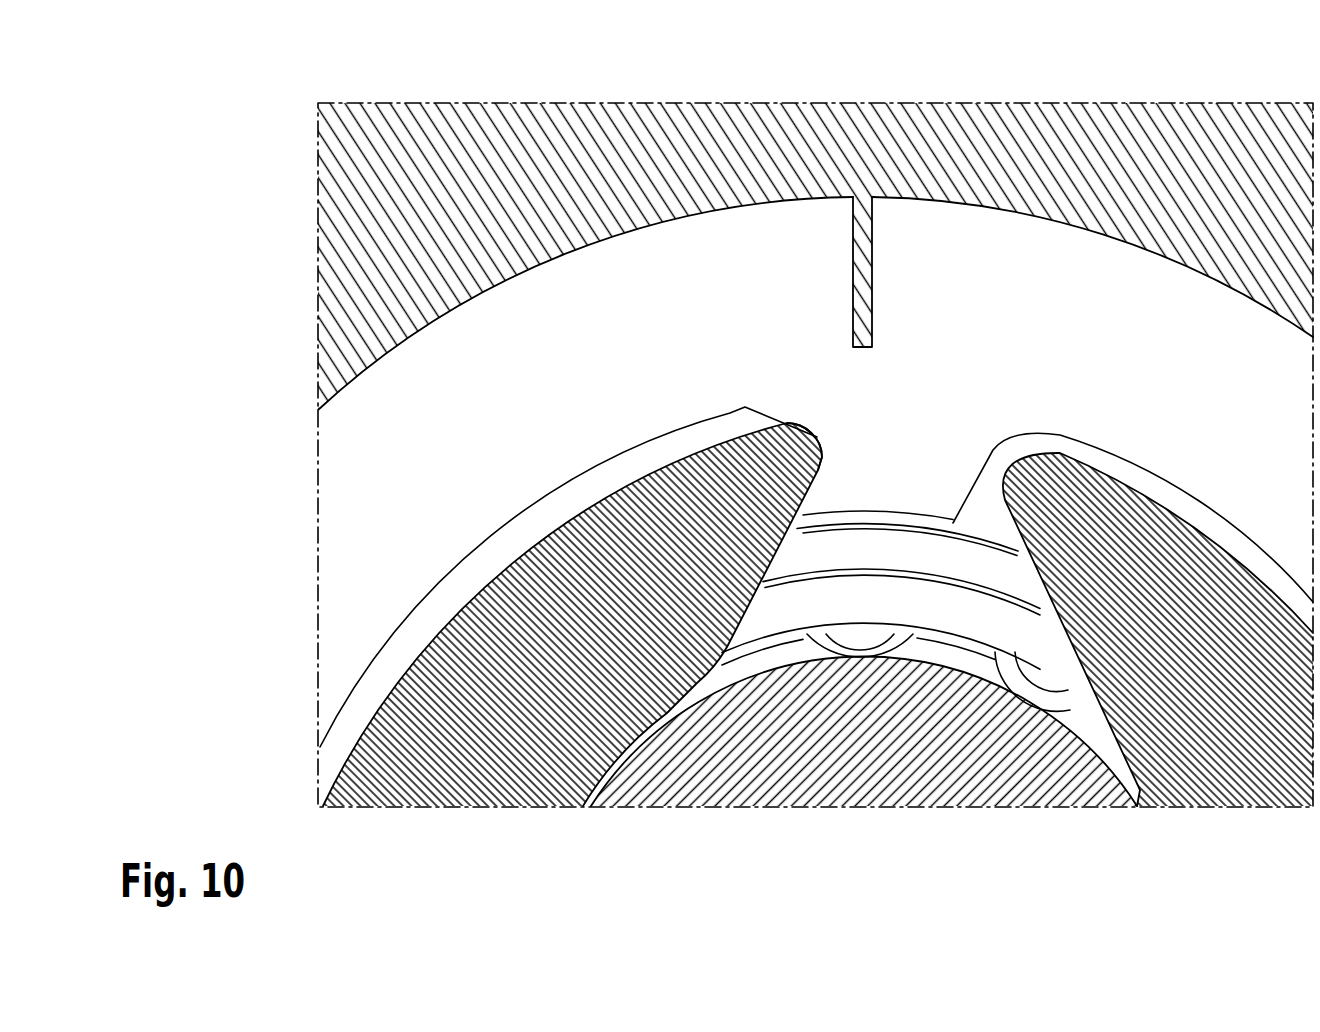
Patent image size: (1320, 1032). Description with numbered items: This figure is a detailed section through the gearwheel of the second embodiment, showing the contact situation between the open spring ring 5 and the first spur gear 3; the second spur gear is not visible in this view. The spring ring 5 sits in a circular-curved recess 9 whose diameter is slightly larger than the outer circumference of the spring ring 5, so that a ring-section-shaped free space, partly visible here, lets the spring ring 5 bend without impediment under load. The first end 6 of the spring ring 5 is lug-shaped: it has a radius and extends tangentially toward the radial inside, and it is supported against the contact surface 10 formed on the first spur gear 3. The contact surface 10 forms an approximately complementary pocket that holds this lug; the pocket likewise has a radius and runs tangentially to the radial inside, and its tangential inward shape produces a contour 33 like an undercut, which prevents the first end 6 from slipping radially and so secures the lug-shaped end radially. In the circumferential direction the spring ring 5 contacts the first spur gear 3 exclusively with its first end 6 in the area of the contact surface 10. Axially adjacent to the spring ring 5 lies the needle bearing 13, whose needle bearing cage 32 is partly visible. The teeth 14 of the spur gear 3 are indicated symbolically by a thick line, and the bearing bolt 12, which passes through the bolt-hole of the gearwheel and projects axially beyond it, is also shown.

The first spur gear 3 is at (1063, 257).
The open spring ring 5 is at (402, 777).
The first end 6 is at (778, 462).
The circular-curved recess 9 is at (423, 603).
The contact surface 10 is at (830, 443).
The bearing bolt 12 is at (1003, 775).
The needle bearing 13 is at (860, 633).
The teeth 14 is at (877, 272).
The needle bearing cage 32 is at (762, 613).
The contour 33 is at (837, 495).